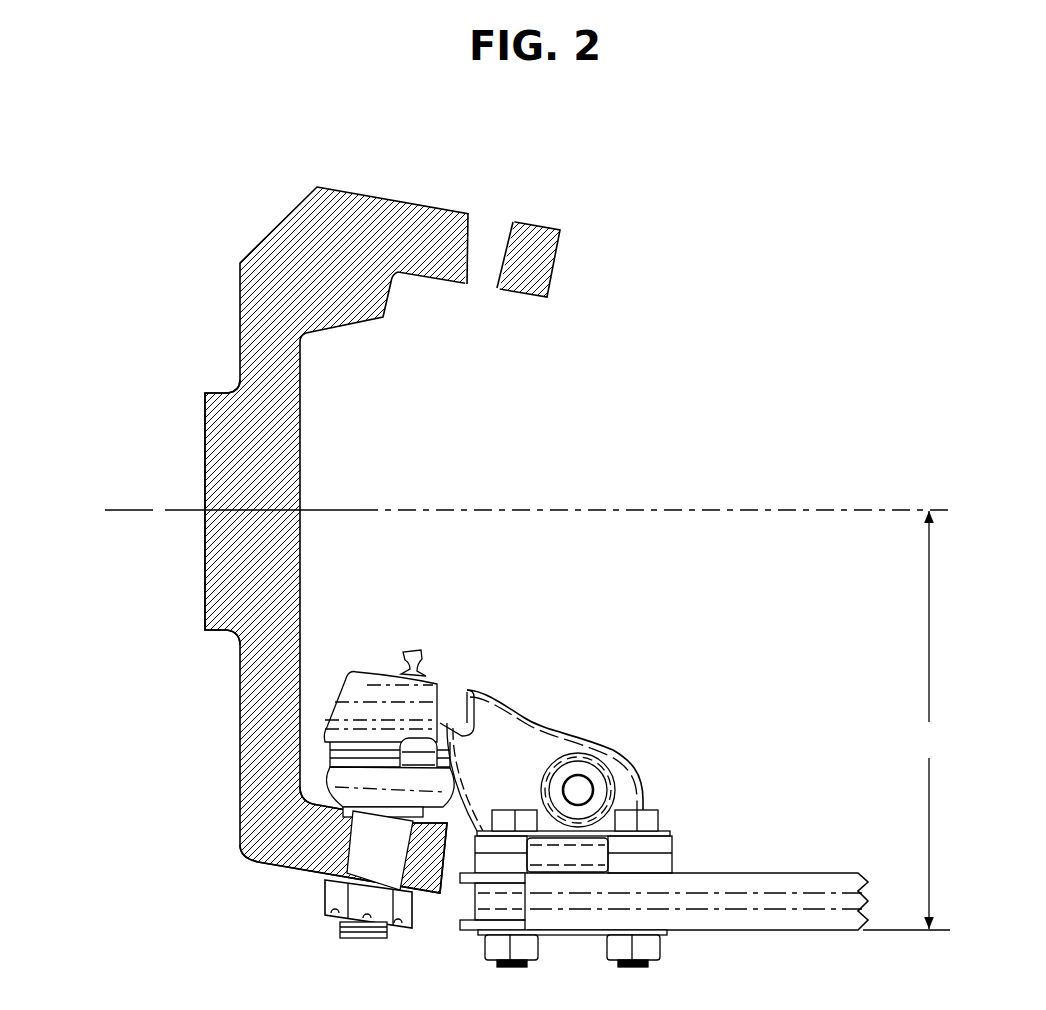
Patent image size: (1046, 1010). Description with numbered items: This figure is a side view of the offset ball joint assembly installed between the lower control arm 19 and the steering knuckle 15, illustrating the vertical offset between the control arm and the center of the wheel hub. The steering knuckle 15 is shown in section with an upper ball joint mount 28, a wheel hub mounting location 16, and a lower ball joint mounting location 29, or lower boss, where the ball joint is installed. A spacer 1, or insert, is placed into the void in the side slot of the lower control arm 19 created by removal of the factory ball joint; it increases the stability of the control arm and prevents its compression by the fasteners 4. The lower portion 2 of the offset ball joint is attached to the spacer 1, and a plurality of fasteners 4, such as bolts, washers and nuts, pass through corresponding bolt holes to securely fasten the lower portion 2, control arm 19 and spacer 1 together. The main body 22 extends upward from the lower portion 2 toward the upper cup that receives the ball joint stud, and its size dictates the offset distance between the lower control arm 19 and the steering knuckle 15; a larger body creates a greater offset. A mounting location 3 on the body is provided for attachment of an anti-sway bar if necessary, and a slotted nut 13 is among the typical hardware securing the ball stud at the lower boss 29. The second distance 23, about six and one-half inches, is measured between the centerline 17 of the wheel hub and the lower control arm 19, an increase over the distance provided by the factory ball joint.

The spacer 1 is at (490, 907).
The lower portion 2 is at (658, 845).
The mounting location 3 is at (590, 779).
The fasteners 4 is at (645, 818).
The slotted nut 13 is at (335, 893).
The steering knuckle 15 is at (270, 326).
The wheel hub mounting location 16 is at (203, 412).
The centerline 17 is at (157, 510).
The lower control arm 19 is at (745, 871).
The main body 22 is at (517, 703).
The second distance 23 is at (906, 720).
The upper ball joint mount 28 is at (485, 235).
The lower ball joint mounting location 29 is at (305, 835).